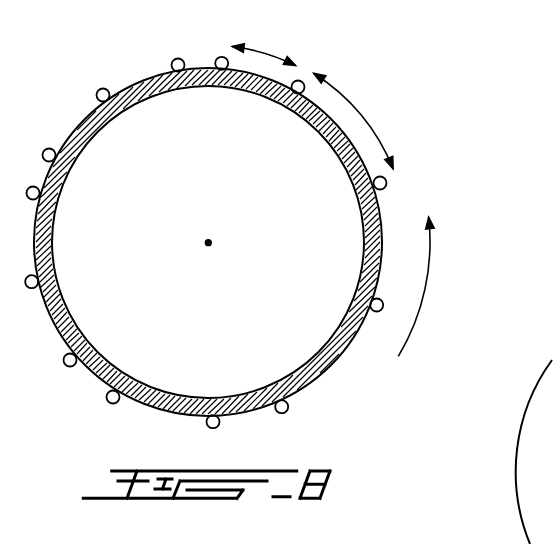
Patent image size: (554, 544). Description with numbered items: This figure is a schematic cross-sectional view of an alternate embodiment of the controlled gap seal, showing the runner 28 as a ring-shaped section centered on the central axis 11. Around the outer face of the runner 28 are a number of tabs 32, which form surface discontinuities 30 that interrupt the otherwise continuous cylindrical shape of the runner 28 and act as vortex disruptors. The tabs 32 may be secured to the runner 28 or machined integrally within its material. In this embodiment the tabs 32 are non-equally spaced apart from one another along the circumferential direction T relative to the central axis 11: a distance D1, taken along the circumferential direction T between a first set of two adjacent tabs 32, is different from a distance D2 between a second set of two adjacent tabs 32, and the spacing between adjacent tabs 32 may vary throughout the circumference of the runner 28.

The runner 28 is at (317, 122).
The surface discontinuities 30 is at (276, 242).
The tabs 32 is at (387, 183).
The central axis 11 is at (209, 247).
The distance D1 is at (356, 121).
The distance D2 is at (264, 43).
The circumferential direction T is at (423, 286).